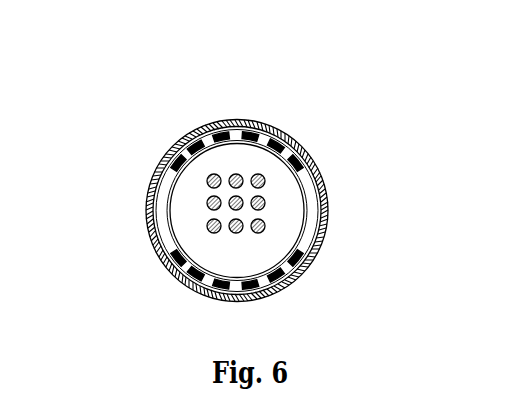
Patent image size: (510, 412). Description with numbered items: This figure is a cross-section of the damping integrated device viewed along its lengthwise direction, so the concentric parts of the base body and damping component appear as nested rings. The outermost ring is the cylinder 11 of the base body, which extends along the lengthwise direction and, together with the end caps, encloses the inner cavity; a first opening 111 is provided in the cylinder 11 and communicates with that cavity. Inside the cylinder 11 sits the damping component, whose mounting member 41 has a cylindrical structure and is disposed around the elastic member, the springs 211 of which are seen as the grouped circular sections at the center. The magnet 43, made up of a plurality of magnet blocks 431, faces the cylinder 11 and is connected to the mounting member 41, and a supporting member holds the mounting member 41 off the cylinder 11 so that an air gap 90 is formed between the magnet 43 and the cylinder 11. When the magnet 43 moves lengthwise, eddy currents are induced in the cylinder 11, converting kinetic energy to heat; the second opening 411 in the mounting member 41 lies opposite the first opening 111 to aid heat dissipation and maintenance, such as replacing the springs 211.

The cylinder 11 is at (267, 296).
The first opening 111 is at (148, 192).
The air gap 90 is at (293, 142).
The magnet 43 is at (237, 164).
The magnet block 431 is at (222, 125).
The second opening 411 is at (165, 220).
The mounting member 41 is at (238, 290).
The spring 211 is at (265, 203).